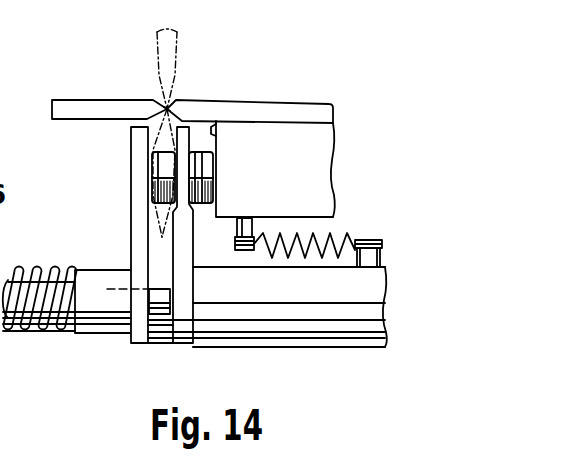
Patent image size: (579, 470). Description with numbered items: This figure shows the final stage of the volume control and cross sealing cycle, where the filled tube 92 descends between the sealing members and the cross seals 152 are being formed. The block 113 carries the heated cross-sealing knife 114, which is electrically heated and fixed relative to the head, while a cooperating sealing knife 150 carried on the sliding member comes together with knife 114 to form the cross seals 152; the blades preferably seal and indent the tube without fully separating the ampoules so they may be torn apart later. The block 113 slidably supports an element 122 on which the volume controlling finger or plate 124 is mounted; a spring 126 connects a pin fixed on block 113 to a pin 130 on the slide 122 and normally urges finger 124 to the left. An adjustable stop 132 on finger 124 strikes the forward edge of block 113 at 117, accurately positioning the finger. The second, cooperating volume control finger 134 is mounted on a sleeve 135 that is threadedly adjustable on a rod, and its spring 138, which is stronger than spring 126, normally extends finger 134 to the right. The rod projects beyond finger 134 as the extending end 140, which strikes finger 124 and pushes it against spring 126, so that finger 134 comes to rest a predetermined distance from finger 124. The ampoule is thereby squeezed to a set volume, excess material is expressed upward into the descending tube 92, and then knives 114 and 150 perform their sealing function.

The filled tube 92 is at (172, 50).
The sealing knife 150 is at (115, 78).
The cross seals 152 is at (172, 105).
The forward edge of block 117 is at (213, 131).
The heated cross-sealing knife 114 is at (302, 108).
The block 113 is at (329, 173).
The adjustable stop 132 is at (213, 165).
The spring 126 is at (330, 237).
The second volume control finger 134 is at (137, 213).
The volume controlling finger 124 is at (193, 290).
The slide element 122 is at (317, 336).
The extending end of rod 140 is at (160, 313).
The pin 130 is at (65, 281).
The sleeve 135 is at (10, 322).
The spring 138 is at (63, 329).